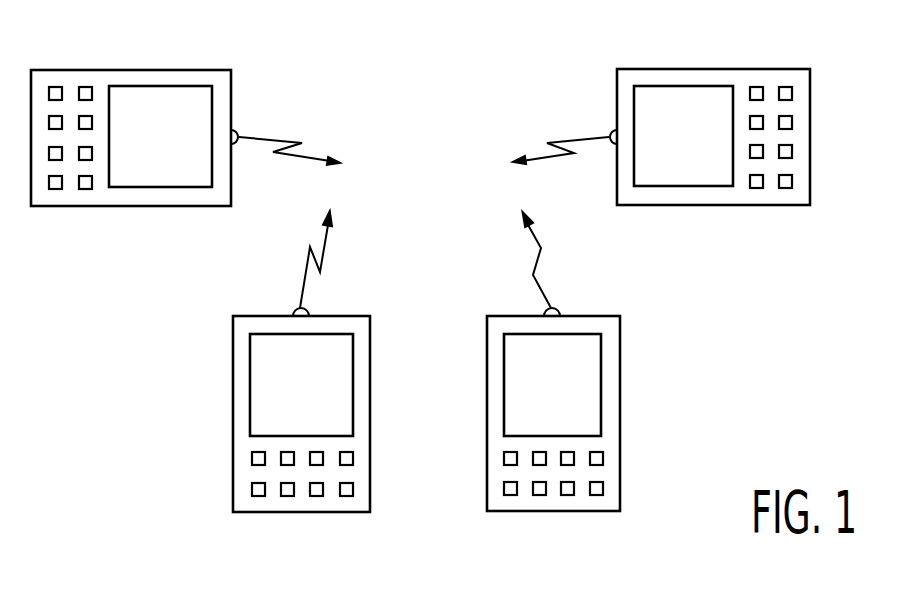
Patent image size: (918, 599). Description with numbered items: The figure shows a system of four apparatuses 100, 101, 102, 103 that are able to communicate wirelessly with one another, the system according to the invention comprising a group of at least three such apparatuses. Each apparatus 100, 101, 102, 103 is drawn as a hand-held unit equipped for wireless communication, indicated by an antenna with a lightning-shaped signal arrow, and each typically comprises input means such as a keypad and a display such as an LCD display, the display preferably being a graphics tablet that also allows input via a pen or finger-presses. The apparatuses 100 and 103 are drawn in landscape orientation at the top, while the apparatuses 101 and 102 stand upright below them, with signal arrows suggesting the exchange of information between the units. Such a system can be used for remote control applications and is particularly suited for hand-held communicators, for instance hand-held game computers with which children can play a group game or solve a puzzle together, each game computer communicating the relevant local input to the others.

The apparatus 100 is at (64, 70).
The apparatus 101 is at (371, 372).
The apparatus 102 is at (621, 371).
The apparatus 103 is at (767, 68).